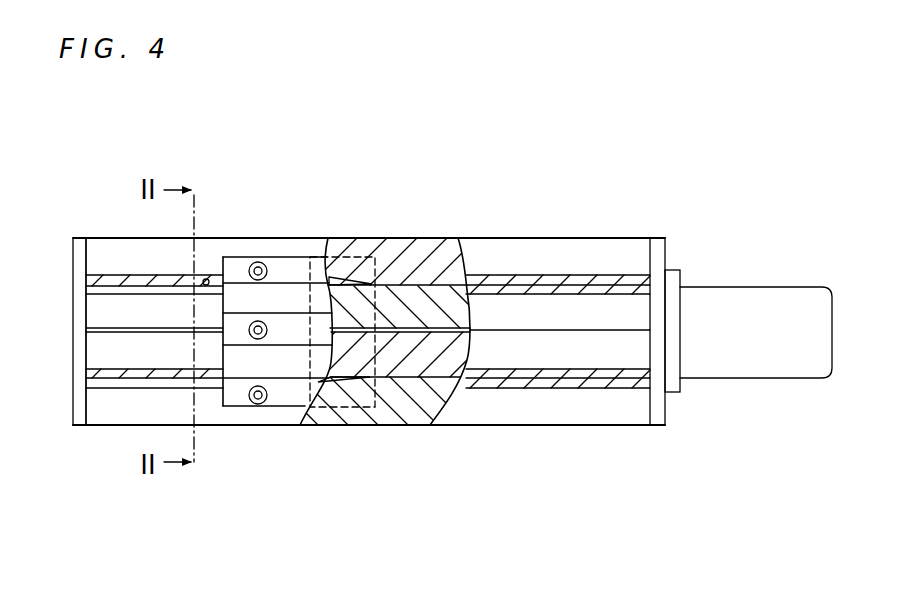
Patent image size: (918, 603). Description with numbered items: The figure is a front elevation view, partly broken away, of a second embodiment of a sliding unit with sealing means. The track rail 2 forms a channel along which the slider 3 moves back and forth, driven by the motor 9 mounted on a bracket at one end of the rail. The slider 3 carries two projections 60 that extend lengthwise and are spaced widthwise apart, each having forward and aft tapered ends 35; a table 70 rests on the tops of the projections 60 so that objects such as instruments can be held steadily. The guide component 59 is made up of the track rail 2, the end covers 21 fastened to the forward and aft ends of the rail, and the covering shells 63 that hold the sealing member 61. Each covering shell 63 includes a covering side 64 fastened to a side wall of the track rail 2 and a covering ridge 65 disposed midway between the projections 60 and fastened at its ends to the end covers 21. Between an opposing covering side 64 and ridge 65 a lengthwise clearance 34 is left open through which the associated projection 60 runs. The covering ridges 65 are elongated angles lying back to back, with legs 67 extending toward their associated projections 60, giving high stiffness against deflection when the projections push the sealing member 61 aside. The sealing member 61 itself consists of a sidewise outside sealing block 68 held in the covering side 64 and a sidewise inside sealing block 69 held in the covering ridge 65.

The track rail 2 is at (528, 428).
The slider 3 is at (245, 400).
The motor 9 is at (770, 305).
The end cover 21 is at (78, 277).
The lengthwise clearance 34 is at (202, 280).
The tapered end 35 is at (345, 274).
The guide component 59 is at (577, 235).
The projection 60 is at (333, 279).
The sealing member 61 is at (417, 236).
The covering shell 63 is at (107, 307).
The covering side 64 is at (132, 248).
The covering ridge 65 is at (132, 313).
The leg 67 is at (620, 318).
The sidewise outside sealing block 68 is at (207, 280).
The sidewise inside sealing block 69 is at (160, 287).
The table 70 is at (285, 287).